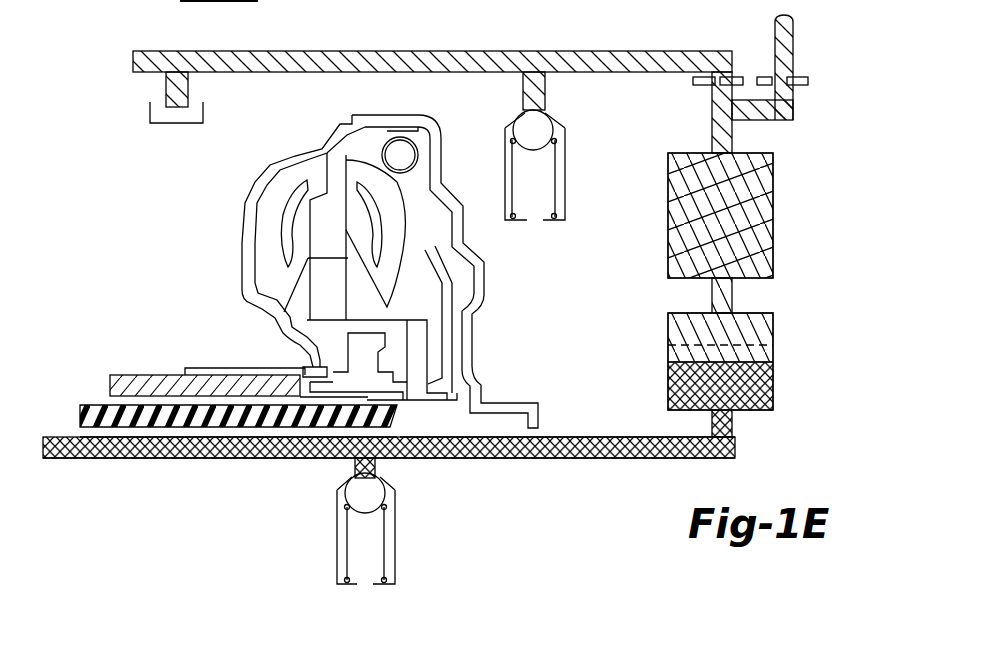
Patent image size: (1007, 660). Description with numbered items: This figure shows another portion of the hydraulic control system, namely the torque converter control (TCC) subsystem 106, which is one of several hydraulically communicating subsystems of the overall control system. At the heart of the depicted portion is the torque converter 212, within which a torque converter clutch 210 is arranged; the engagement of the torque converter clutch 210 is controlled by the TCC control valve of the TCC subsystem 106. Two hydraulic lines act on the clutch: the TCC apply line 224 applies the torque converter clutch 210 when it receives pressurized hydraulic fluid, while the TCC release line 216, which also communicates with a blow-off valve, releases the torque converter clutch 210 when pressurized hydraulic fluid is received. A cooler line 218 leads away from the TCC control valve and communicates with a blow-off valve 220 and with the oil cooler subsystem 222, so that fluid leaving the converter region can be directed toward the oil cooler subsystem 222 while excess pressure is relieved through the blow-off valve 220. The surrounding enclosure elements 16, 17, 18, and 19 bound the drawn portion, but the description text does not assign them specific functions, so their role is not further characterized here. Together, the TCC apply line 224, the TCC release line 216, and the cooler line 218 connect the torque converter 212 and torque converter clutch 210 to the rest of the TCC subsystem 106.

The top wall 16 is at (456, 117).
The first plate 17 is at (189, 385).
The second plate 18 is at (224, 415).
The base plate 19 is at (375, 448).
The torque converter control (TCC) subsystem 106 is at (487, 503).
The torque converter clutch 210 is at (378, 363).
The torque converter 212 is at (478, 260).
The TCC release line 216 is at (176, 428).
The cooler line 218 is at (575, 437).
The blow-off valve 220 is at (335, 526).
The oil cooler subsystem 222 is at (770, 302).
The TCC apply line 224 is at (160, 368).